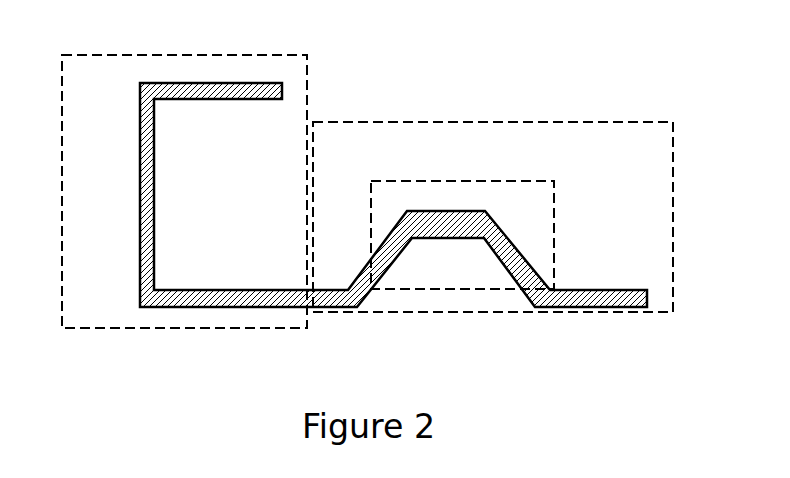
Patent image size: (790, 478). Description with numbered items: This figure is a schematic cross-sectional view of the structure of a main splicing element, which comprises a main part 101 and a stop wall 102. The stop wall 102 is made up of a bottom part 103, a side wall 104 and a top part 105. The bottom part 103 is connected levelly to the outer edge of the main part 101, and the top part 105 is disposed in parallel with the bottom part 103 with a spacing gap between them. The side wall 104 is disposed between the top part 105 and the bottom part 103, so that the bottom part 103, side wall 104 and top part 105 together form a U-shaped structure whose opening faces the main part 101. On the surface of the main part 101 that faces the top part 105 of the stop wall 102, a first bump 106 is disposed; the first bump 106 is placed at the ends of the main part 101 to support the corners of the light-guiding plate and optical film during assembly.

The main part 101 is at (473, 120).
The stop wall 102 is at (118, 330).
The bottom part 103 is at (232, 310).
The side wall 104 is at (138, 190).
The top part 105 is at (223, 82).
The first bump 106 is at (473, 290).